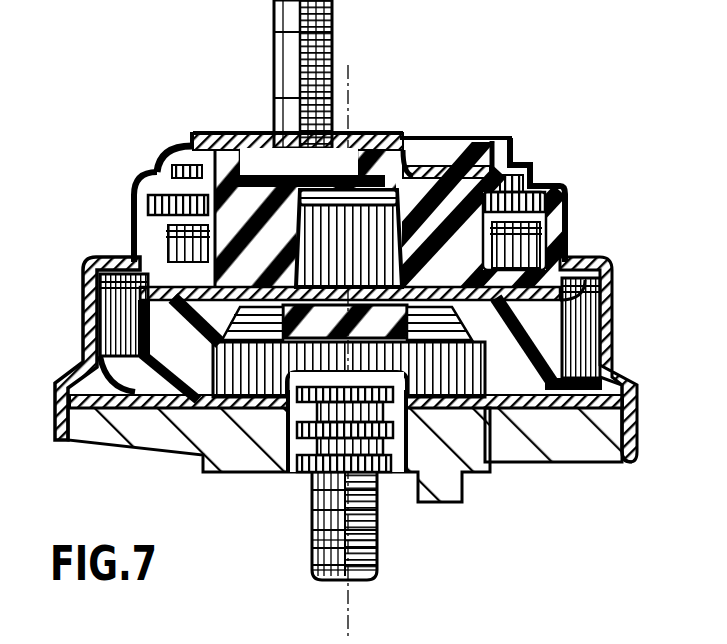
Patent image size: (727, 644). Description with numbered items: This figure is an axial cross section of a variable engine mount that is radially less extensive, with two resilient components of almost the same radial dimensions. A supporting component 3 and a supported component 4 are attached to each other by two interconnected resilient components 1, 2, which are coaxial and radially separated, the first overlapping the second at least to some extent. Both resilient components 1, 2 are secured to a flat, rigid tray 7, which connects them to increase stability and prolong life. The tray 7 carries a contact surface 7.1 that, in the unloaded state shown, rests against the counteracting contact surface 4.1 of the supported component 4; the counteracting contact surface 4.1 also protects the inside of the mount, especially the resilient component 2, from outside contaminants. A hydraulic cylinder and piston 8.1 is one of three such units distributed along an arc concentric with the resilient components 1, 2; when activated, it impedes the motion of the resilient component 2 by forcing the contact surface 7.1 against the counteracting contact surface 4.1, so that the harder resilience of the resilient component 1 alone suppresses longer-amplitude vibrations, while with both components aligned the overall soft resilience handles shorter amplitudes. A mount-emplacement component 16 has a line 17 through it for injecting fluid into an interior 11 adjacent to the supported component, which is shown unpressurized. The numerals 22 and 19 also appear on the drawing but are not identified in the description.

The threaded shaft 22 is at (352, 97).
The supporting component 3 is at (392, 135).
The resilient component 1 is at (432, 248).
The tray 7 is at (494, 331).
The counteracting contact surface 4.1 is at (100, 260).
The contact surface 7.1 is at (88, 321).
The right bellows seal 19 is at (607, 340).
The supported component 4 is at (488, 474).
The resilient component 2 is at (193, 366).
The interior 11 is at (378, 369).
The piston 8.1 is at (393, 412).
The mount-emplacement component 16 is at (335, 508).
The line 17 is at (322, 554).